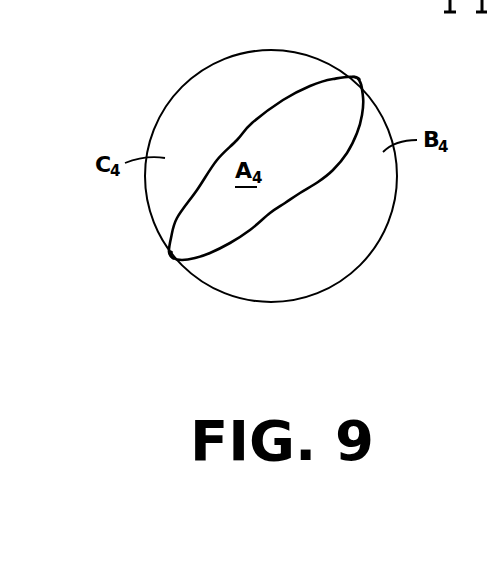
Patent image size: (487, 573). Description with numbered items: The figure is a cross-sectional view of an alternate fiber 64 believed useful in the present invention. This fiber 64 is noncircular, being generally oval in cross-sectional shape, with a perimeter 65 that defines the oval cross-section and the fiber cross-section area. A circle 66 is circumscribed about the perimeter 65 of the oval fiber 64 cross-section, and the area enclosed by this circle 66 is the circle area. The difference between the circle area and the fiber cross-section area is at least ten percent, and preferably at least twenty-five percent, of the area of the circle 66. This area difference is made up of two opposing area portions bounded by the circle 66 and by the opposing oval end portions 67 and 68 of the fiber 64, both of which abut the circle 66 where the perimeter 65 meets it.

The oval fiber 64 is at (347, 153).
The perimeter 65 is at (283, 103).
The circumscribed circle 66 is at (163, 110).
The oval end portion 67 is at (357, 78).
The oval end portion 68 is at (170, 257).